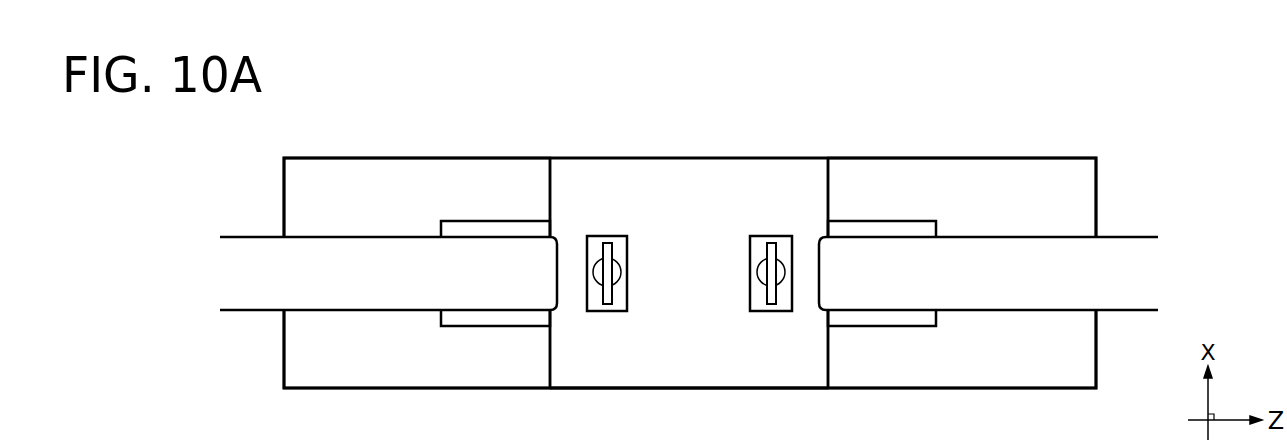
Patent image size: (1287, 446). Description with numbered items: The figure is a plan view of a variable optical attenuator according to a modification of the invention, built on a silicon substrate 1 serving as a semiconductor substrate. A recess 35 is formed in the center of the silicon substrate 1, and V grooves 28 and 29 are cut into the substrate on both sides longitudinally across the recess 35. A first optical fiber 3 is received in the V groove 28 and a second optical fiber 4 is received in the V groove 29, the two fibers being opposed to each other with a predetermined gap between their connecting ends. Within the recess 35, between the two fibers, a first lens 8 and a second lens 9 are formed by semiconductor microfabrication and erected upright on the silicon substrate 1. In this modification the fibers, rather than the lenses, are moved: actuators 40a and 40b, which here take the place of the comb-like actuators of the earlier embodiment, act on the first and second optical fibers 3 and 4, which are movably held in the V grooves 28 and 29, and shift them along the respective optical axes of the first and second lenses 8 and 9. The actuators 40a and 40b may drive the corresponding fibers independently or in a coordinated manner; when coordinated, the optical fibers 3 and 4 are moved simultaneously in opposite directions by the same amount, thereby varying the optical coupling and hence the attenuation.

The silicon substrate 1 is at (1010, 372).
The first optical fiber 3 is at (428, 262).
The second optical fiber 4 is at (965, 260).
The first lens 8 is at (617, 287).
The second lens 9 is at (760, 287).
The V groove 28 is at (348, 262).
The V groove 29 is at (1035, 255).
The recess 35 is at (732, 380).
The actuator 40a is at (498, 228).
The actuator 40b is at (880, 228).